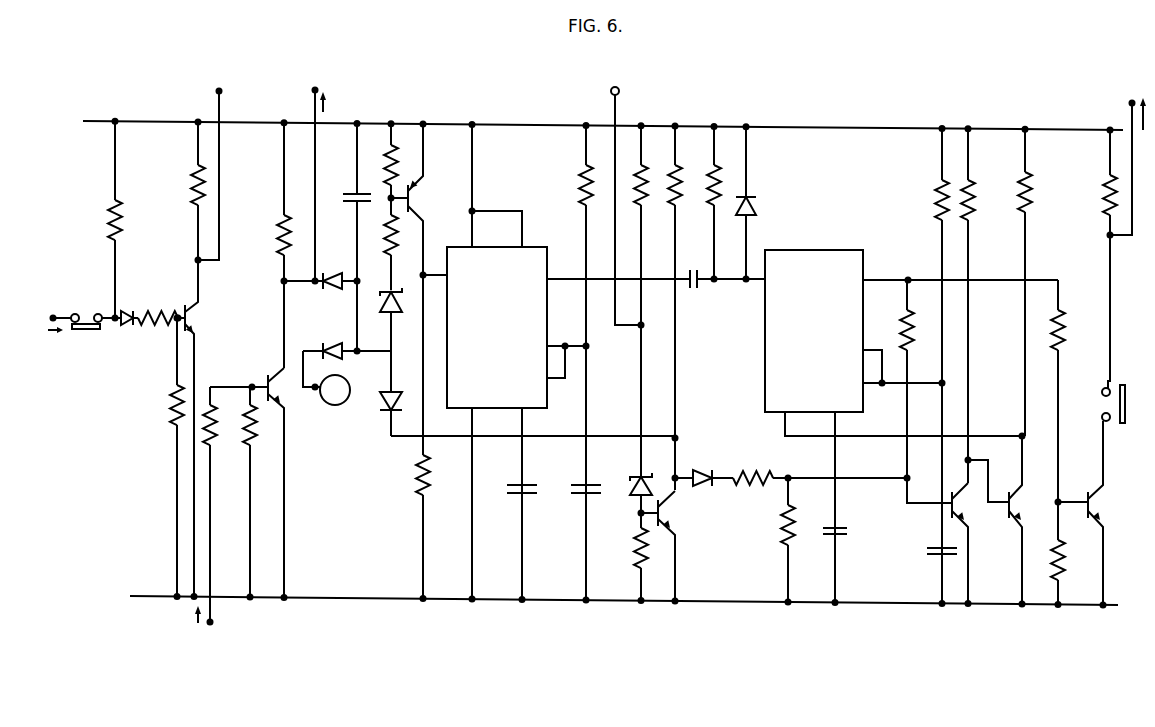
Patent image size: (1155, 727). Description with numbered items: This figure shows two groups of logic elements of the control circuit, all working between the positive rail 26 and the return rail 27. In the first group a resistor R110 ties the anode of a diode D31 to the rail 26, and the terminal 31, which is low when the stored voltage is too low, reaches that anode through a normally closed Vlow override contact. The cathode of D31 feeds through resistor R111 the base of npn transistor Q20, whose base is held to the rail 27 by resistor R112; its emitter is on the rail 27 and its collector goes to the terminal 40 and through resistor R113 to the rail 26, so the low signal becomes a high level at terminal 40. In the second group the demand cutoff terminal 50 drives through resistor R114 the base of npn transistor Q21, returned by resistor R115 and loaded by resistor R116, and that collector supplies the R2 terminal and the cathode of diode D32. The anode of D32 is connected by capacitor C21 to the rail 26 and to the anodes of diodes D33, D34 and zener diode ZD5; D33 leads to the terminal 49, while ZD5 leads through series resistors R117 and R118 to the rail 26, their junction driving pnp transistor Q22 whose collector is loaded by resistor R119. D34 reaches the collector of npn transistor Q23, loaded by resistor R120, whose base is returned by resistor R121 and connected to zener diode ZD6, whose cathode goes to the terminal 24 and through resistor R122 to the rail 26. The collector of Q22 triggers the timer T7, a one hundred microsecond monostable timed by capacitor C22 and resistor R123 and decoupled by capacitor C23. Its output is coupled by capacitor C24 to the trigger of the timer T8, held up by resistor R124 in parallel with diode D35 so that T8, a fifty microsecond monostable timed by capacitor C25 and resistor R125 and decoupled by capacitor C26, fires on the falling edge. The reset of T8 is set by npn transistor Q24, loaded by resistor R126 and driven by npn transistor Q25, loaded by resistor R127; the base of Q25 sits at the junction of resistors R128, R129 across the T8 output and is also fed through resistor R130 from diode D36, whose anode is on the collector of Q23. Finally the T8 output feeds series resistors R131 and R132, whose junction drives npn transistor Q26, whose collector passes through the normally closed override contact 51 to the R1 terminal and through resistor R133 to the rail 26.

The rail 26 is at (88, 121).
The rail 27 is at (145, 598).
The terminal 31 is at (52, 323).
The terminal 40 is at (215, 93).
The terminal 49 is at (314, 391).
The demand cutoff terminal 50 is at (214, 623).
The normally closed override contact 51 is at (1101, 396).
The terminal 24 is at (619, 94).
The R1 terminal R1 is at (1128, 154).
The R2 terminal R2 is at (315, 172).
The timer circuit T7 is at (447, 386).
The timer T8 is at (765, 374).
The resistor R110 is at (110, 235).
The resistor R111 is at (153, 311).
The resistor R112 is at (170, 421).
The resistor R113 is at (190, 203).
The resistor R114 is at (208, 410).
The resistor R115 is at (246, 442).
The resistor R116 is at (277, 235).
The resistor R117 is at (384, 240).
The resistor R118 is at (387, 142).
The resistor R119 is at (416, 487).
The resistor R120 is at (648, 208).
The resistor R121 is at (632, 548).
The resistor R122 is at (671, 175).
The resistor R123 is at (582, 197).
The resistor R124 is at (709, 175).
The resistor R125 is at (935, 207).
The resistor R126 is at (1033, 197).
The resistor R127 is at (976, 205).
The resistor R128 is at (782, 532).
The resistor R129 is at (900, 338).
The resistor R130 is at (750, 471).
The resistor R131 is at (1068, 336).
The resistor R132 is at (1063, 560).
The resistor R133 is at (1105, 208).
The diode D31 is at (134, 326).
The diode D32 is at (332, 274).
The diode D33 is at (323, 344).
The diode D34 is at (382, 406).
The diode D35 is at (758, 206).
The diode D36 is at (705, 489).
The zener diode ZD5 is at (382, 307).
The zener diode ZD6 is at (624, 484).
The capacitor C21 is at (352, 197).
The capacitor C22 is at (574, 497).
The capacitor C23 is at (512, 495).
The capacitor C24 is at (697, 290).
The capacitor C25 is at (924, 550).
The capacitor C26 is at (823, 539).
The npn transistor Q20 is at (193, 316).
The npn transistor Q21 is at (266, 378).
The pnp transistor Q22 is at (426, 196).
The npn transistor Q23 is at (666, 521).
The npn transistor Q24 is at (1010, 483).
The npn transistor Q25 is at (960, 518).
The npn transistor Q26 is at (1092, 495).